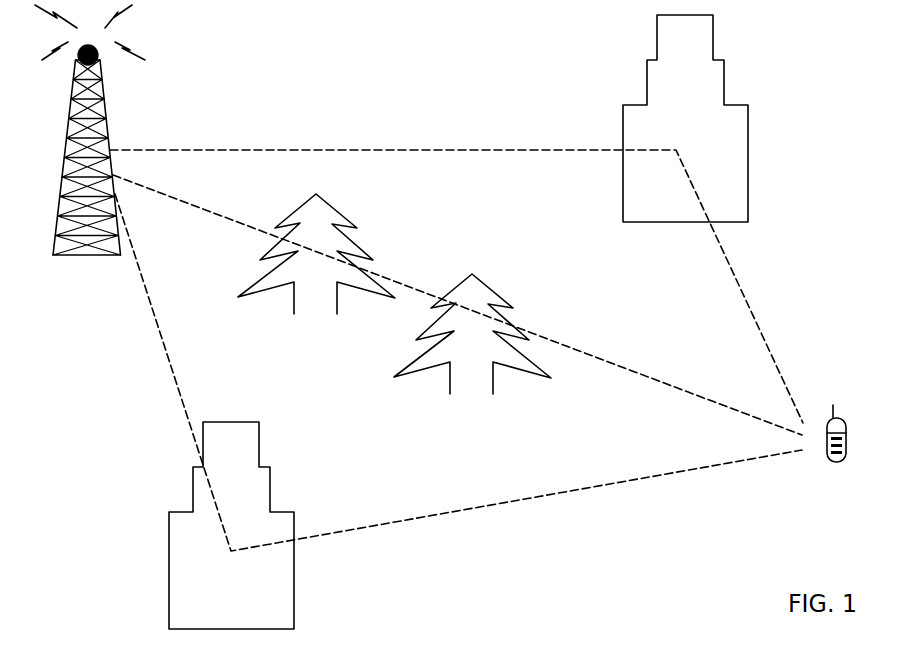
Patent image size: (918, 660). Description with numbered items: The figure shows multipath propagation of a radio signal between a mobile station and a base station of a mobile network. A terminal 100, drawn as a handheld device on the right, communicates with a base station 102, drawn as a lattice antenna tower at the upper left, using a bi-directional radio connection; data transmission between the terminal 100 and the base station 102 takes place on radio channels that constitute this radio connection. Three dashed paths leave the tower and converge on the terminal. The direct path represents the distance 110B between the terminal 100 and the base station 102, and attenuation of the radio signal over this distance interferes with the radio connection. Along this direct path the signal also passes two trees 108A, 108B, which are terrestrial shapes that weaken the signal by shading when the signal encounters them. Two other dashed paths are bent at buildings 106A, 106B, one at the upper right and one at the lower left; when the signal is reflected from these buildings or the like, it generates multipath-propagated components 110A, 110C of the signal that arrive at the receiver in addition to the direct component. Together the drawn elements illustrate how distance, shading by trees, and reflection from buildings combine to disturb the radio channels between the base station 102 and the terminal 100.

The terminal 100 is at (840, 463).
The base station 102 is at (101, 255).
The building 106A is at (748, 158).
The building 106B is at (294, 617).
The tree 108A is at (362, 253).
The tree 108B is at (503, 298).
The multipath-propagated component 110A is at (760, 330).
The distance 110B is at (690, 396).
The multipath-propagated component 110C is at (538, 497).